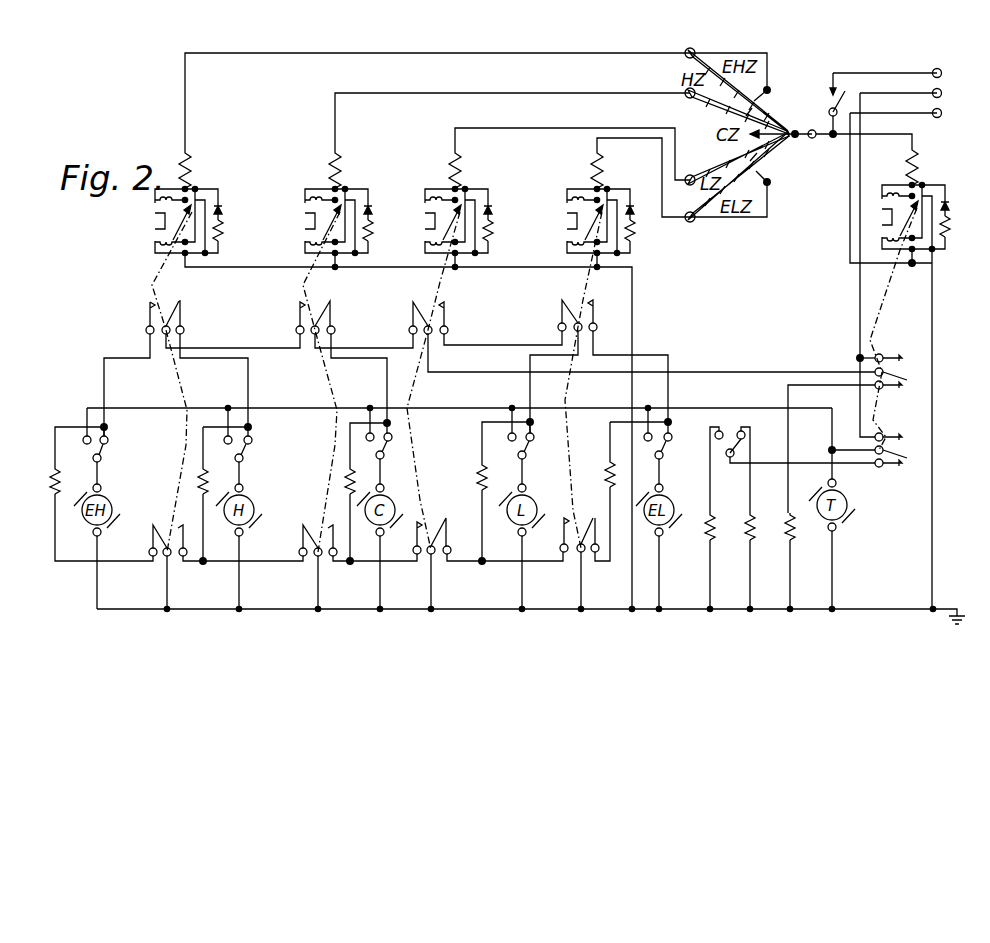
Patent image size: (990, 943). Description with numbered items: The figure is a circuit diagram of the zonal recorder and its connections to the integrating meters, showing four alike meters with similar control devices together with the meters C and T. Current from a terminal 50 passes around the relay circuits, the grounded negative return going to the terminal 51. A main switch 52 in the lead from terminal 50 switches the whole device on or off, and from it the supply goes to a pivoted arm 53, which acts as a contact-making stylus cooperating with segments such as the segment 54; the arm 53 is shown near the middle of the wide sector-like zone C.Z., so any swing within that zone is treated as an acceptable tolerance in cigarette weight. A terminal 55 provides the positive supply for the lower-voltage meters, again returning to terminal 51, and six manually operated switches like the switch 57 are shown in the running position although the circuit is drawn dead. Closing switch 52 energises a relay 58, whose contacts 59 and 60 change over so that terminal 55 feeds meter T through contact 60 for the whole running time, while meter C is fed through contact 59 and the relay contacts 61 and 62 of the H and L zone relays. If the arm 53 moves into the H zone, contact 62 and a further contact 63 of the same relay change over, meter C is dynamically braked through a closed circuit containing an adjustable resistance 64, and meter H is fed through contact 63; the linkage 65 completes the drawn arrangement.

The terminal 50 is at (930, 63).
The terminal 51 is at (934, 112).
The main switch 52 is at (833, 90).
The pivoted arm 53 is at (796, 131).
The segment 54 is at (762, 100).
The terminal 55 is at (935, 92).
The switch 57 is at (101, 452).
The relay 58 is at (939, 194).
The contact 59 is at (902, 378).
The contact 60 is at (902, 455).
The relay contact 61 is at (428, 300).
The relay contact 62 is at (317, 298).
The contact 63 is at (320, 523).
The resistance 64 is at (181, 300).
The mechanical linkage 65 is at (334, 462).